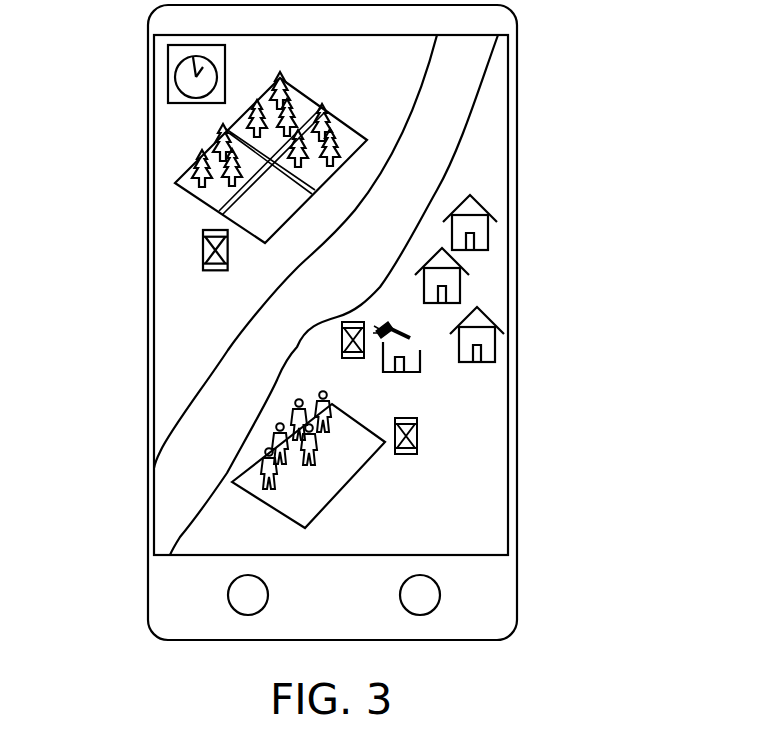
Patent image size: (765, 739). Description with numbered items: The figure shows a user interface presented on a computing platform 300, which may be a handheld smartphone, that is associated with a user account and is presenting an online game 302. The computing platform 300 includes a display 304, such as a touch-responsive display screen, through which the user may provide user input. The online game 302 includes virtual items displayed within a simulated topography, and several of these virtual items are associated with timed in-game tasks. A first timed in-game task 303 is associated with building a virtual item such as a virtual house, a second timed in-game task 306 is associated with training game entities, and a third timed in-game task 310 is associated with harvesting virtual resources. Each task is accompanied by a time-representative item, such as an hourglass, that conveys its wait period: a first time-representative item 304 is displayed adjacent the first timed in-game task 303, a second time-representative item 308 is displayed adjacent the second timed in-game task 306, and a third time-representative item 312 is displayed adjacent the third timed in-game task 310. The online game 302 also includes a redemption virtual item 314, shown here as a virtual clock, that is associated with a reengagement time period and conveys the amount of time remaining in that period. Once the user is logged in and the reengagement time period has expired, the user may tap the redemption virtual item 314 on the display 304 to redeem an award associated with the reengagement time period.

The computing platform 300 is at (517, 95).
The online game 302 is at (331, 295).
The first timed in-game task 303 is at (418, 372).
The display 304 is at (341, 354).
The second timed in-game task 306 is at (356, 476).
The second time-representative item 308 is at (417, 433).
The third timed in-game task 310 is at (268, 236).
The third time-representative item 312 is at (223, 270).
The redemption virtual item 314 is at (168, 98).